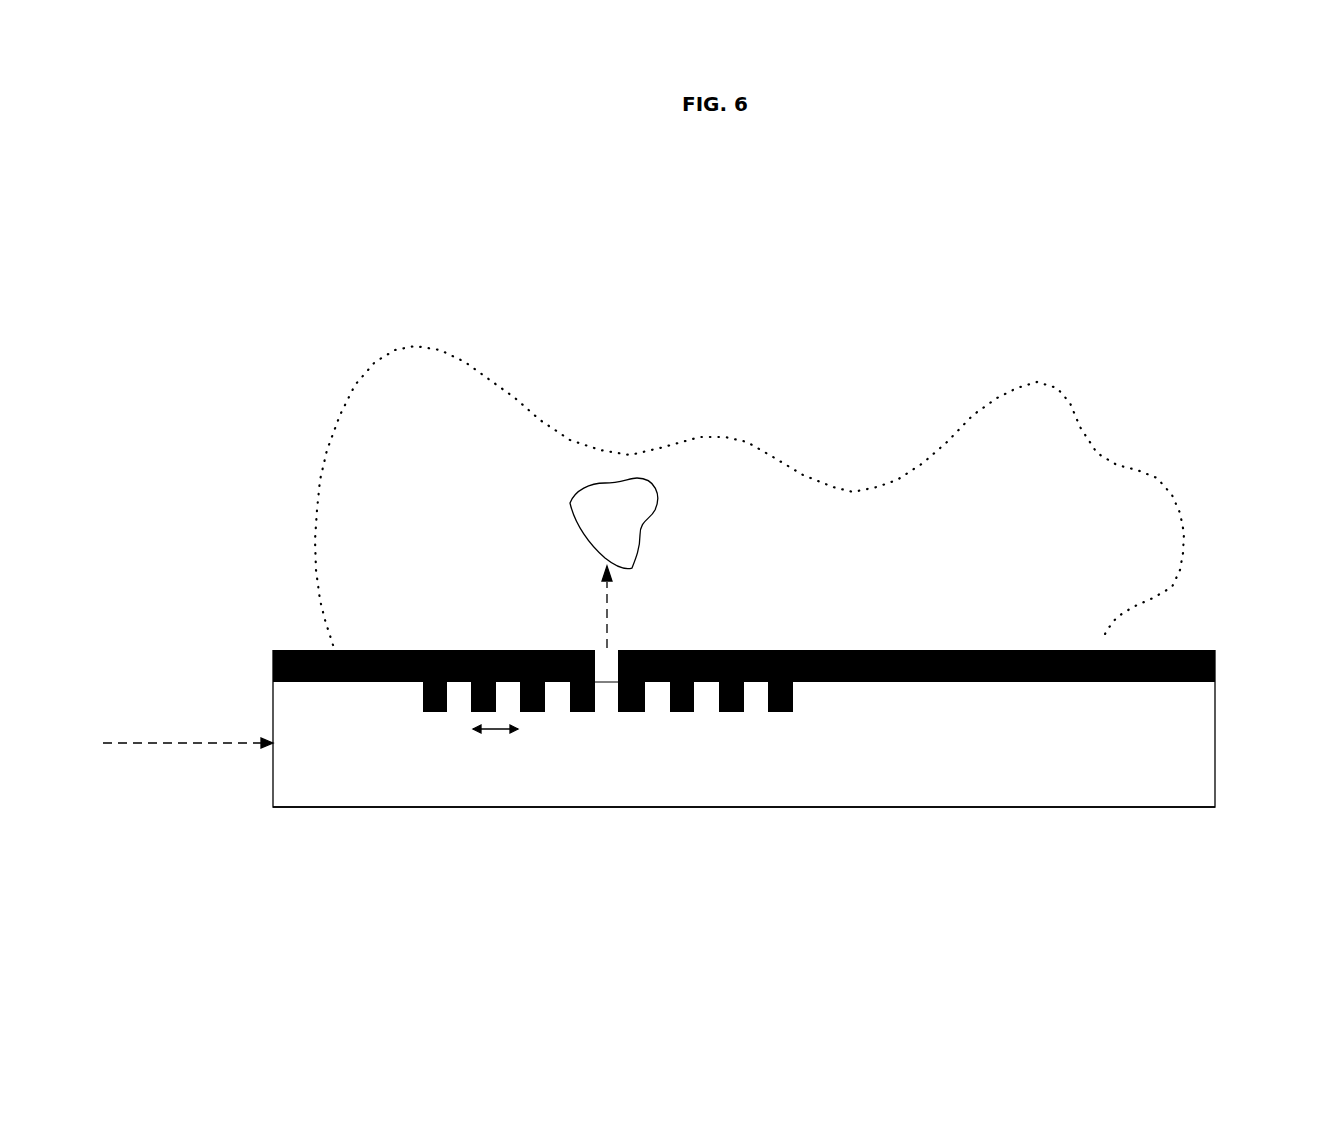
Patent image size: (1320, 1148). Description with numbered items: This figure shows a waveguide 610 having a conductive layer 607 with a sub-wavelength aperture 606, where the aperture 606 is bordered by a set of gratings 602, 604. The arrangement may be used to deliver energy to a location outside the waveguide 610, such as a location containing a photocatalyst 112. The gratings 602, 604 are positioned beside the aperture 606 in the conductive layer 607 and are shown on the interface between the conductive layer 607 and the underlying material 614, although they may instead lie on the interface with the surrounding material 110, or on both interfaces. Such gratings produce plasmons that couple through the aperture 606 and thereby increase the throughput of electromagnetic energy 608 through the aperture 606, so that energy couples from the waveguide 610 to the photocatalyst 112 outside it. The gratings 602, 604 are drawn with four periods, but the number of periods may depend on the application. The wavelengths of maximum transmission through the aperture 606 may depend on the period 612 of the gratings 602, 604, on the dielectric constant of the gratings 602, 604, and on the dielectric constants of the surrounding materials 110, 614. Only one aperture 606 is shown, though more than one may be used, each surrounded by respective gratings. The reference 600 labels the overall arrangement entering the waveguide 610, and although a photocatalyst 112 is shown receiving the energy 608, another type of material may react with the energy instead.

The surrounding material 110 is at (442, 441).
The photocatalyst 112 is at (570, 503).
The gas flow input 600 is at (178, 745).
The grating 602 is at (435, 712).
The grating 604 is at (732, 712).
The sub-wavelength aperture 606 is at (608, 710).
The conductive layer 607 is at (1215, 650).
The electromagnetic energy 608 is at (605, 604).
The waveguide 610 is at (733, 807).
The period 612 is at (495, 746).
The material 614 is at (998, 747).